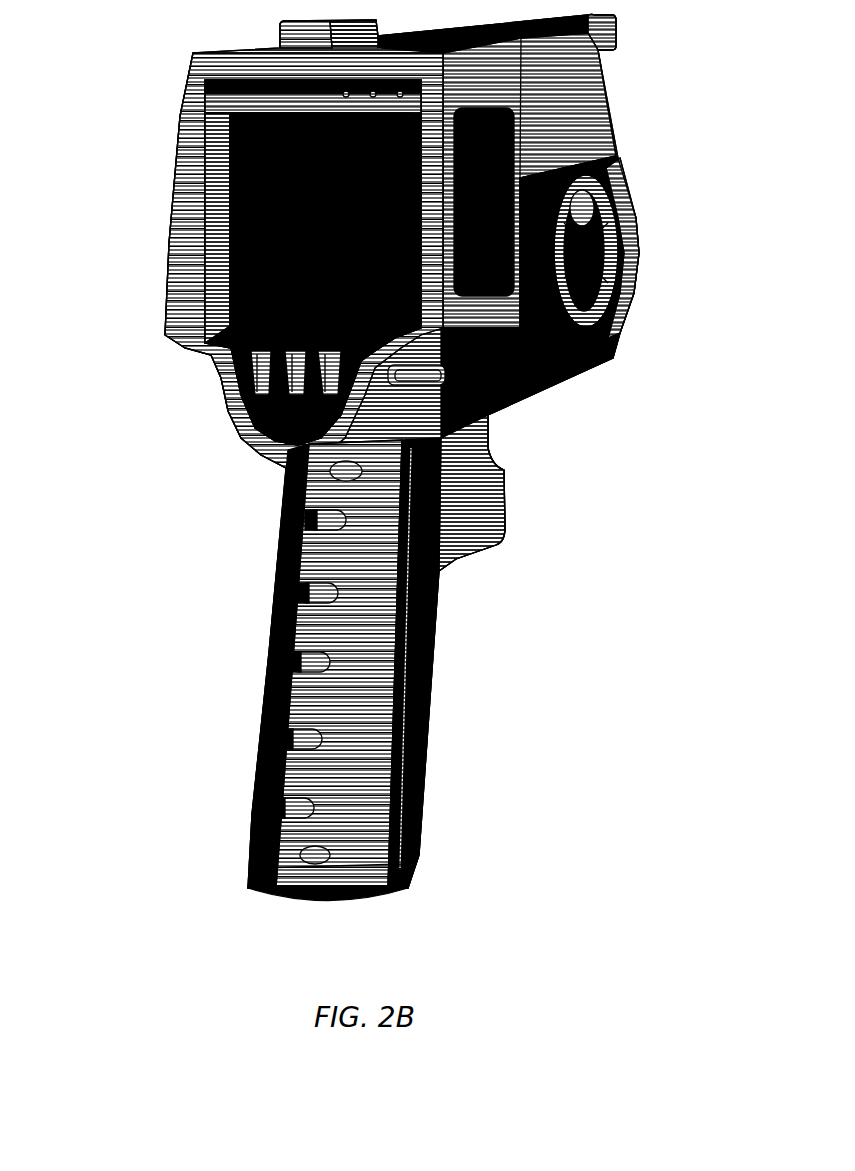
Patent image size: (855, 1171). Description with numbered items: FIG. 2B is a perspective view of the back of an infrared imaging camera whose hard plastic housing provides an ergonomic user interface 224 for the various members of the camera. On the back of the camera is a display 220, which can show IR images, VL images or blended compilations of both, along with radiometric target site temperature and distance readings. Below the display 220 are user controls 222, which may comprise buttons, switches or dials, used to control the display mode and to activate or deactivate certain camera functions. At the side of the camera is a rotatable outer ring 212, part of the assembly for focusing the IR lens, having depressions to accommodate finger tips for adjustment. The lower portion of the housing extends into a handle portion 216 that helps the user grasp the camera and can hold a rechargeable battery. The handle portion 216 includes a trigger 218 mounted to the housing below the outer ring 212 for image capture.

The rotatable outer ring 212 is at (604, 262).
The handle portion 216 is at (366, 707).
The trigger 218 is at (500, 474).
The display 220 is at (258, 213).
The controls 222 is at (315, 372).
The user interface 224 is at (152, 355).